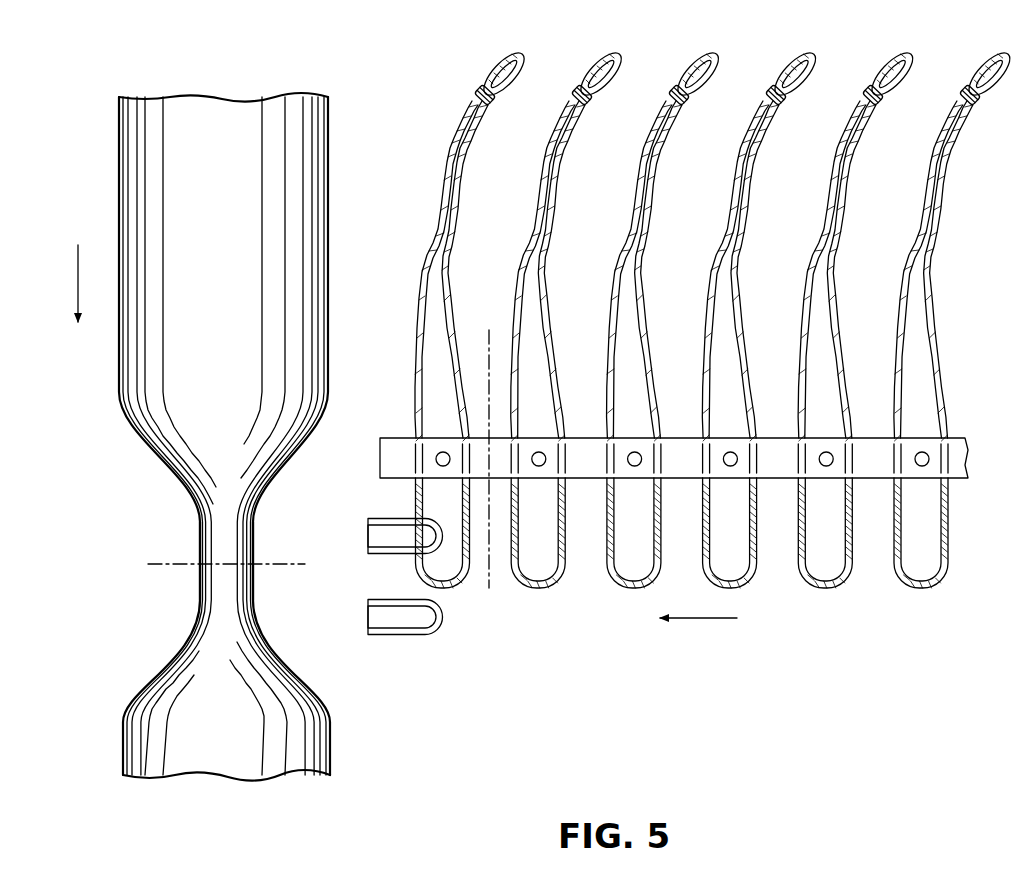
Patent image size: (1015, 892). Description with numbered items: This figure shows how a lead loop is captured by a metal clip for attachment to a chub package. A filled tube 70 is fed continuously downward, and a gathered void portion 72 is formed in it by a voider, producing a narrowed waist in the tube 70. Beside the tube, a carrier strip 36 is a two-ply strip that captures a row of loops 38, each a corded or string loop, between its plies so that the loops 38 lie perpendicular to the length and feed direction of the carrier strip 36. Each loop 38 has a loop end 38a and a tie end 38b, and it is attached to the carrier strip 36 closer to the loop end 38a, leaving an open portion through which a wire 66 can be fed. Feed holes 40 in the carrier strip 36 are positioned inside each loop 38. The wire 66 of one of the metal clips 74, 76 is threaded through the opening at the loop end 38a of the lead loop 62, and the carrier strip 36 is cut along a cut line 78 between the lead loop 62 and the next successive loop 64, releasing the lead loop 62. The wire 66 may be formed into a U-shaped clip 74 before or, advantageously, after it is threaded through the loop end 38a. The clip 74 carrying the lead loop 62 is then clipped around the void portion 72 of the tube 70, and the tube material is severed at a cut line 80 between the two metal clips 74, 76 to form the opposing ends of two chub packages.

The carrier strip 36 is at (674, 459).
The loop 38 is at (696, 328).
The loop end 38a is at (460, 550).
The tie end 38b is at (488, 69).
The feed hole 40 is at (827, 451).
The lead loop 62 is at (427, 271).
The next successive loop 64 is at (526, 271).
The wire 66 is at (375, 546).
The filled tube 70 is at (328, 182).
The gathered void portion 72 is at (257, 536).
The metal clip 74 is at (390, 520).
The metal clip 76 is at (388, 599).
The cut line 78 is at (492, 333).
The cut line 80 is at (170, 563).